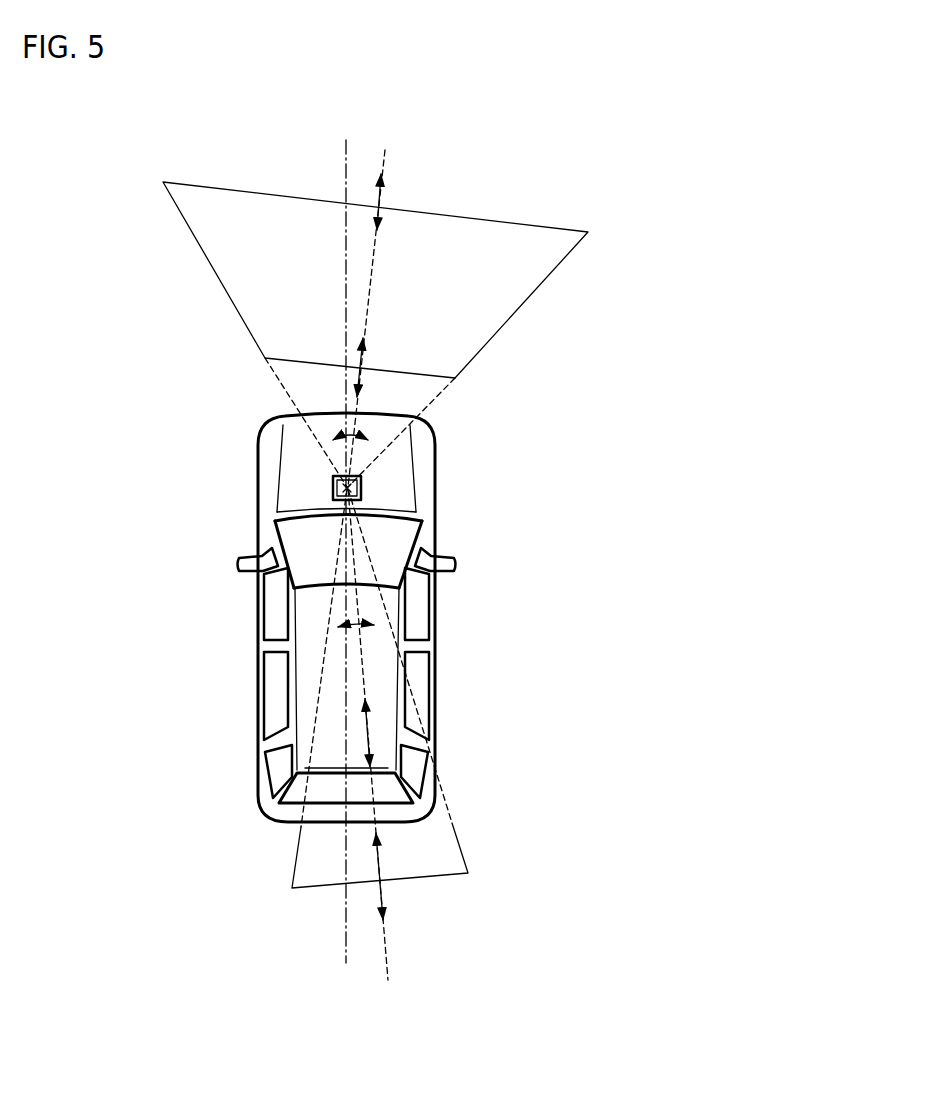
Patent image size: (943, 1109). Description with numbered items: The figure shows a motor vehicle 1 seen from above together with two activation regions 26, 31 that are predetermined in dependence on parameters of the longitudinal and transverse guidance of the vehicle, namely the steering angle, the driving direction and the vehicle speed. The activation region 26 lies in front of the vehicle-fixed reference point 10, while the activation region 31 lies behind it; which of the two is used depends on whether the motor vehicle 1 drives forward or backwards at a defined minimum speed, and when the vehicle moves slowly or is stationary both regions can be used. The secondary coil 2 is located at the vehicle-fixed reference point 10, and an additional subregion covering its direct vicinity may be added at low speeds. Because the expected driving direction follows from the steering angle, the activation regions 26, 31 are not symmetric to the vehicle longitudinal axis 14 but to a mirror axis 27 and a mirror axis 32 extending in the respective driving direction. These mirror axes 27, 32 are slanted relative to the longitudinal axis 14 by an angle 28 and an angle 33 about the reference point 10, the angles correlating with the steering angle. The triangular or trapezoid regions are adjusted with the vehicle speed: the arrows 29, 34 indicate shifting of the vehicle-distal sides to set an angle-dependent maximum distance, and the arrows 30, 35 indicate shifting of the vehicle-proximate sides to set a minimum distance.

The motor vehicle 1 is at (466, 623).
The secondary coil 2 is at (362, 492).
The vehicle-fixed reference point 10 is at (358, 484).
The vehicle longitudinal axis 14 is at (346, 928).
The activation region 26 is at (430, 313).
The mirror axis 27 is at (372, 278).
The angle 28 is at (338, 420).
The arrow 29 is at (382, 207).
The arrow 30 is at (361, 360).
The activation region 31 is at (406, 868).
The mirror axis 32 is at (389, 958).
The angle 33 is at (357, 628).
The arrow 34 is at (383, 889).
The arrow 35 is at (312, 735).